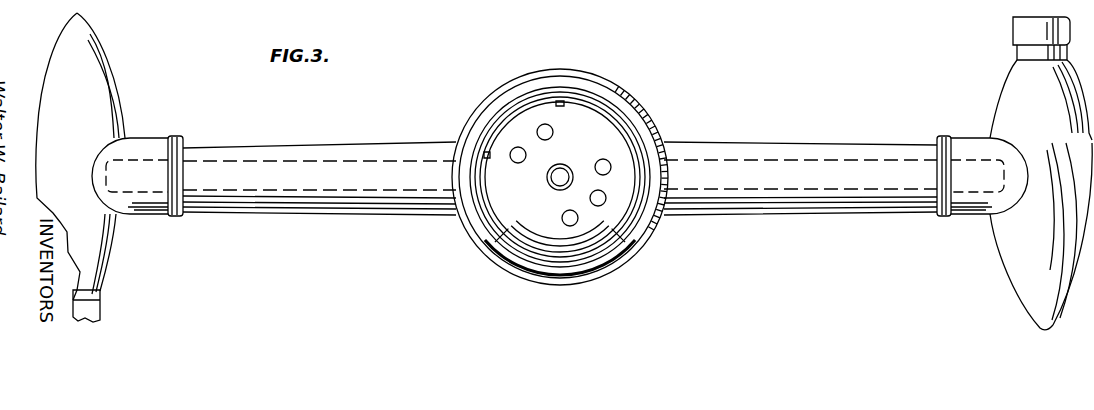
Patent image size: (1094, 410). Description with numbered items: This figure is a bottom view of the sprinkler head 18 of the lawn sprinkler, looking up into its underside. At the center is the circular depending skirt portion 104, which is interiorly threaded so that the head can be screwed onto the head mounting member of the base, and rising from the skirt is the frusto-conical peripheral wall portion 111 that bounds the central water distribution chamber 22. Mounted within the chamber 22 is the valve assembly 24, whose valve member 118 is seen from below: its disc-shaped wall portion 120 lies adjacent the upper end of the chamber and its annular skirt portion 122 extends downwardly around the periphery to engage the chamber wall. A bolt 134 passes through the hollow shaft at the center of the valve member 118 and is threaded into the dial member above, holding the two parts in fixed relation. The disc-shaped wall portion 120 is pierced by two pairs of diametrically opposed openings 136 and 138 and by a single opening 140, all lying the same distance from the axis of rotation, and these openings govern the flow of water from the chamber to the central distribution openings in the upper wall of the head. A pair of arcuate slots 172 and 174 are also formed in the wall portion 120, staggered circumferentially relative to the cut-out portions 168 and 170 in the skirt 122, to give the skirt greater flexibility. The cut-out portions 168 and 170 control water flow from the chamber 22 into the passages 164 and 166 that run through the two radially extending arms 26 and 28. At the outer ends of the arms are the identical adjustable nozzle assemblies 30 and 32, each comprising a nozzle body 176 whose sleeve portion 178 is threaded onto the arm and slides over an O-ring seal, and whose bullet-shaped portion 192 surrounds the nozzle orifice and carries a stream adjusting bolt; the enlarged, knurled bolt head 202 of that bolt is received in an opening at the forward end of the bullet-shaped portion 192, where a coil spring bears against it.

The sprinkler head 18 is at (633, 88).
The central water distribution chamber 22 is at (653, 233).
The valve assembly 24 is at (612, 179).
The arm 26 is at (306, 160).
The arm 28 is at (783, 153).
The adjustable nozzle assembly 30 is at (128, 101).
The adjustable nozzle assembly 32 is at (990, 115).
The depending skirt portion 104 is at (525, 260).
The peripheral wall portion 111 is at (660, 233).
The valve member 118 is at (508, 242).
The disc-shaped wall portion 120 is at (557, 230).
The annular skirt portion 122 is at (533, 103).
The bolt 134 is at (556, 184).
The opening 136 is at (553, 132).
The opening 138 is at (526, 155).
The single opening 140 is at (607, 149).
The passage 164 is at (366, 190).
The passage 166 is at (762, 189).
The cut-out portion 168 is at (620, 240).
The cut-out portion 170 is at (512, 165).
The arcuate slot 172 is at (567, 101).
The arcuate slot 174 is at (547, 247).
The nozzle body 176 is at (110, 247).
The sleeve portion 178 is at (158, 142).
The bullet-shaped portion 192 is at (88, 60).
The bolt head 202 is at (102, 297).